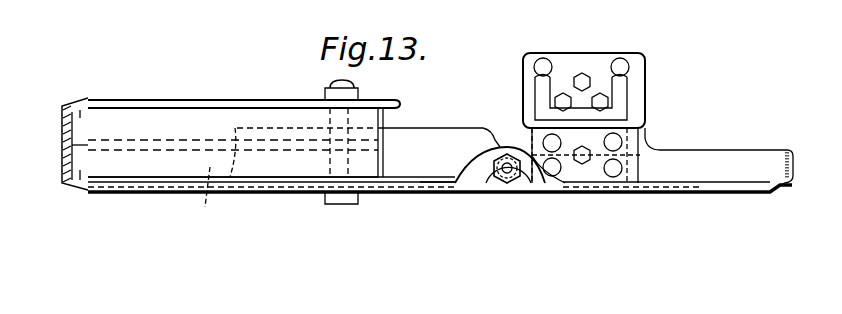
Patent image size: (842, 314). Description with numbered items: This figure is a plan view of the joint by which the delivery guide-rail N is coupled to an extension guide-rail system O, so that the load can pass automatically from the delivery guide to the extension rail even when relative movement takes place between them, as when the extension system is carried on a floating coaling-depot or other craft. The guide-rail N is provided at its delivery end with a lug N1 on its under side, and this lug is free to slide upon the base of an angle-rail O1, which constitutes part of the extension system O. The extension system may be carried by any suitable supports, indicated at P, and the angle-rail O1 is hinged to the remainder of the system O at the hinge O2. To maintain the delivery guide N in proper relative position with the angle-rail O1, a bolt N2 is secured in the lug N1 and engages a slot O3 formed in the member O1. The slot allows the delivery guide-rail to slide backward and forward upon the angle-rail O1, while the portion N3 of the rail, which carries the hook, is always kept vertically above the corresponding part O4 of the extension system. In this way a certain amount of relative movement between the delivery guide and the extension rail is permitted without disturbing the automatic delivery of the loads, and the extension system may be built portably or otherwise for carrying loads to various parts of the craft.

The guide-rail N is at (193, 123).
The lug N1 is at (210, 184).
The bolt N2 is at (341, 204).
The portion of the rail N3 is at (128, 187).
The extension-guide-rail system O is at (712, 167).
The angle-rail O1 is at (450, 140).
The hinge O2 is at (507, 183).
The slot O3 is at (430, 187).
The part of the extension system O4 is at (703, 183).
The supports P is at (623, 100).